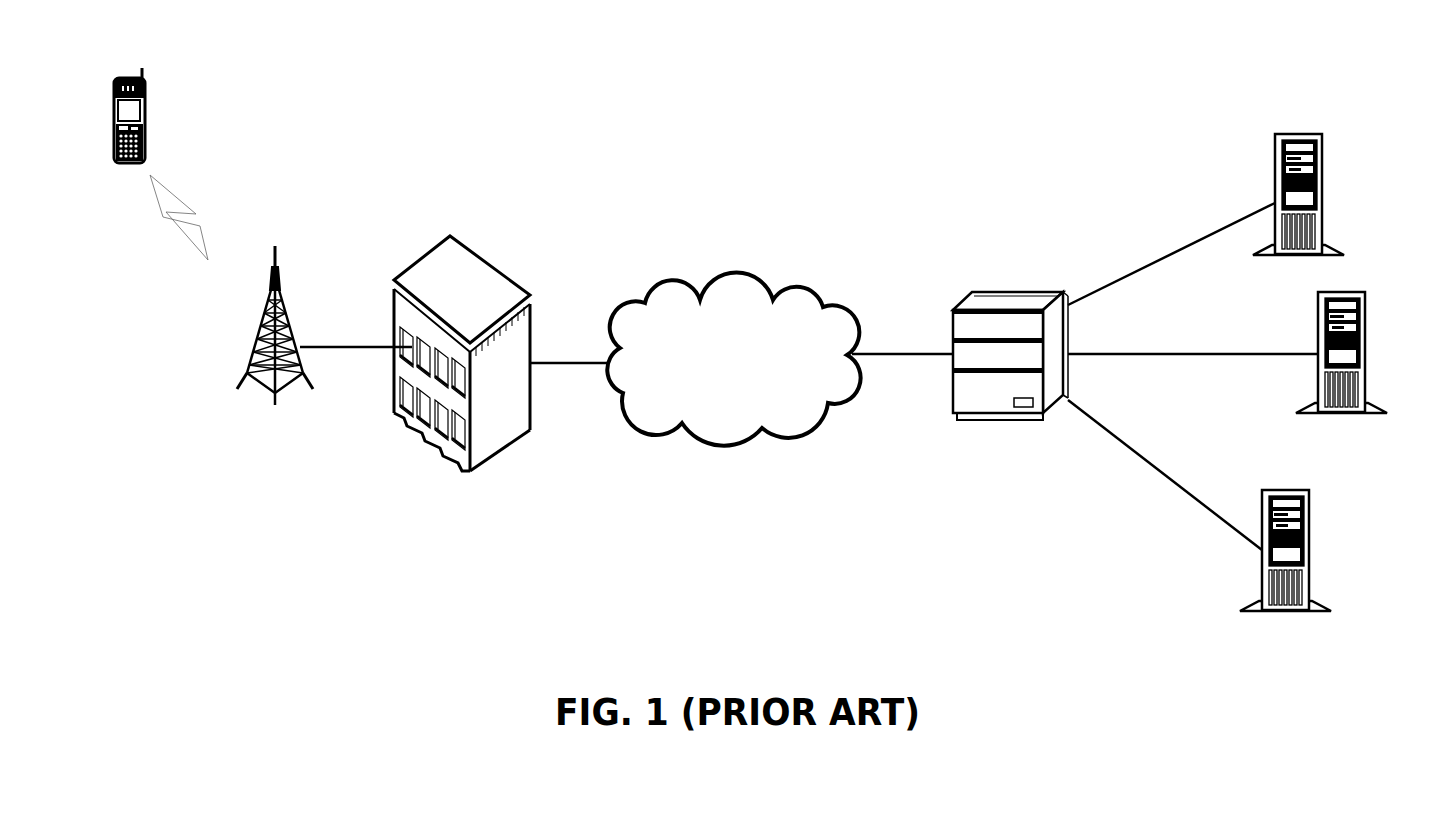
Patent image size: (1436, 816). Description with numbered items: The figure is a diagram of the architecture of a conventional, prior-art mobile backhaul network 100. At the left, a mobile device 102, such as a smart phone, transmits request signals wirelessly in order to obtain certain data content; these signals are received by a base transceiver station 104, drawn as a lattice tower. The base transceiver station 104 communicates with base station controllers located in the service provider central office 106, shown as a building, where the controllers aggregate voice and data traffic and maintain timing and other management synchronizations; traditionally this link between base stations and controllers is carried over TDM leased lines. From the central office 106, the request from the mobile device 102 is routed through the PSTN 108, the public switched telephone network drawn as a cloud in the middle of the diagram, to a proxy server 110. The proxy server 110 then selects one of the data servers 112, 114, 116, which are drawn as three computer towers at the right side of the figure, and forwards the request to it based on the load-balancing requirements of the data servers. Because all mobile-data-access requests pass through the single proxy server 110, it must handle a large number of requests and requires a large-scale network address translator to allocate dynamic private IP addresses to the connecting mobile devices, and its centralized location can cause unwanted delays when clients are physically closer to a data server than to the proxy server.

The mobile backhaul network 100 is at (757, 648).
The mobile device 102 is at (147, 113).
The base transceiver station 104 is at (248, 338).
The service provider central office 106 is at (470, 471).
The PSTN 108 is at (733, 359).
The proxy server 110 is at (972, 292).
The data server 112 is at (1323, 195).
The data server 114 is at (1367, 352).
The data server 116 is at (1310, 552).